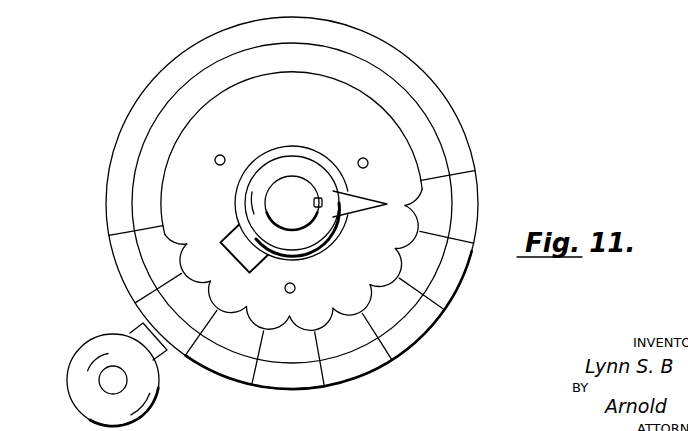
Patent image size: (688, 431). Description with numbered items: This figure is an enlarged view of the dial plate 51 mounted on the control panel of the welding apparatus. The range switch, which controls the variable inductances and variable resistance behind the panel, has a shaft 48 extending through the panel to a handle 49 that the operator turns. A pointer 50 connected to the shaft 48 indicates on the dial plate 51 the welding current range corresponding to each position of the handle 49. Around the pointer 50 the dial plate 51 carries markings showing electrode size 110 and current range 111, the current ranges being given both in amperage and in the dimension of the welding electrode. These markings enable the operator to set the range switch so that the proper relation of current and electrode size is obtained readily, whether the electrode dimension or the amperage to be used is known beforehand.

The shaft 48 is at (287, 186).
The handle 49 is at (88, 352).
The pointer 50 is at (366, 203).
The dial plate 51 is at (432, 95).
The electrode size markings 110 is at (478, 203).
The current range markings 111 is at (447, 276).